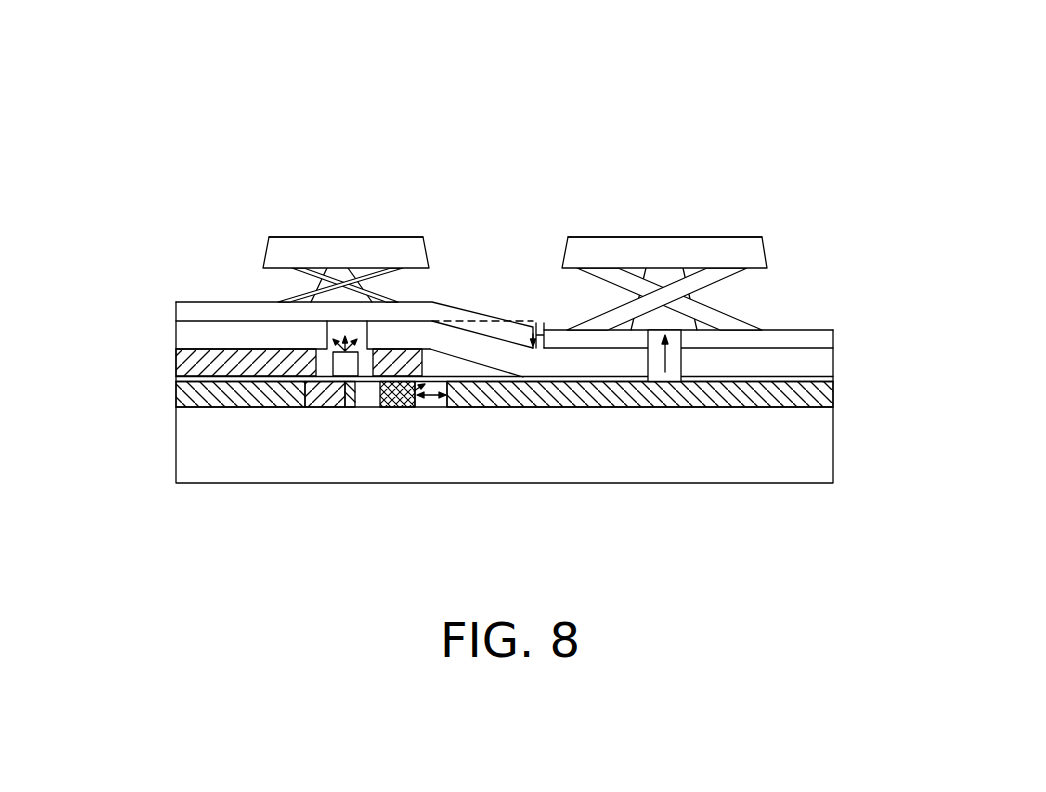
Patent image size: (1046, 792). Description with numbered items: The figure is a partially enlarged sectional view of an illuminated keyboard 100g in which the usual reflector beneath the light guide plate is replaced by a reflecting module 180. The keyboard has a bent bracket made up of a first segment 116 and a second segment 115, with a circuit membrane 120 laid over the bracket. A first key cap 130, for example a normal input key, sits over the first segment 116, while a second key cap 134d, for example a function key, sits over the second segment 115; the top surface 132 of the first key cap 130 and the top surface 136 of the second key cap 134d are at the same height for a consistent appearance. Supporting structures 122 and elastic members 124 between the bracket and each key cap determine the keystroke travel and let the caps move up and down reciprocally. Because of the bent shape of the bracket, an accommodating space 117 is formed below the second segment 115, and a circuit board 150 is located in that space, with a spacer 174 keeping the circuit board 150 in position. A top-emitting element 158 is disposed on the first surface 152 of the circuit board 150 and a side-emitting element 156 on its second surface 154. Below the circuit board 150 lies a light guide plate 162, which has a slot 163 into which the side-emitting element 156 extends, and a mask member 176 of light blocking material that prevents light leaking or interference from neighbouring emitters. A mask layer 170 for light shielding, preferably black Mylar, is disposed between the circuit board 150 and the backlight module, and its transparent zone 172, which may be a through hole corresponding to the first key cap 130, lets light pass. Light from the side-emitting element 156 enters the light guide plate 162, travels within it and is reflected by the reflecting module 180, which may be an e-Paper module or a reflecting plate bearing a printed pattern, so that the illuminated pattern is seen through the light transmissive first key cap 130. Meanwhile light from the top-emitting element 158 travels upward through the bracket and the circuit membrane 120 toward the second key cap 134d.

The illuminated keyboard 100g is at (130, 105).
The reflecting module 180 is at (807, 452).
The circuit membrane 120 is at (185, 310).
The second segment 115 is at (187, 328).
The first segment 116 is at (822, 362).
The accommodating space 117 is at (440, 362).
The spacer 174 is at (183, 372).
The top-emitting element 158 is at (330, 351).
The circuit board 150 is at (177, 380).
The first surface 152 is at (223, 372).
The second surface 154 is at (223, 386).
The light guide plate 162 is at (827, 397).
The mask member 176 is at (308, 405).
The slot 163 is at (351, 395).
The side-emitting element 156 is at (393, 407).
The mask layer 170 is at (583, 382).
The transparent zone 172 is at (665, 386).
The second key cap 134d is at (285, 243).
The top surface of second key cap 136 is at (330, 228).
The elastic member 124 is at (660, 278).
The supporting structure 122 is at (720, 276).
The first key cap 130 is at (607, 242).
The top surface of first key cap 132 is at (664, 227).